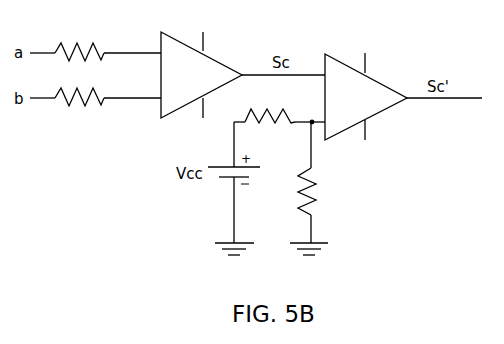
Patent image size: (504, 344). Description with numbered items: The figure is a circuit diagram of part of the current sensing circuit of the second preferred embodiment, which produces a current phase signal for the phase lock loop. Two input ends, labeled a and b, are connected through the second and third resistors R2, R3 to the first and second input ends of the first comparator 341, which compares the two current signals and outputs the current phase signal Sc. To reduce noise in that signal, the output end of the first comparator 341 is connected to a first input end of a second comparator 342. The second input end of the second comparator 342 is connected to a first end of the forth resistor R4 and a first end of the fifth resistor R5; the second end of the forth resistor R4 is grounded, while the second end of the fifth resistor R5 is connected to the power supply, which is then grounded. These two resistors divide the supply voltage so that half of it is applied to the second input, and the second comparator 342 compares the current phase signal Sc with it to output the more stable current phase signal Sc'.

The first comparator 341 is at (212, 72).
The second comparator 342 is at (375, 93).
The second resistor R2 is at (79, 39).
The third resistor R3 is at (79, 109).
The forth resistor R4 is at (318, 191).
The fifth resistor R5 is at (270, 105).